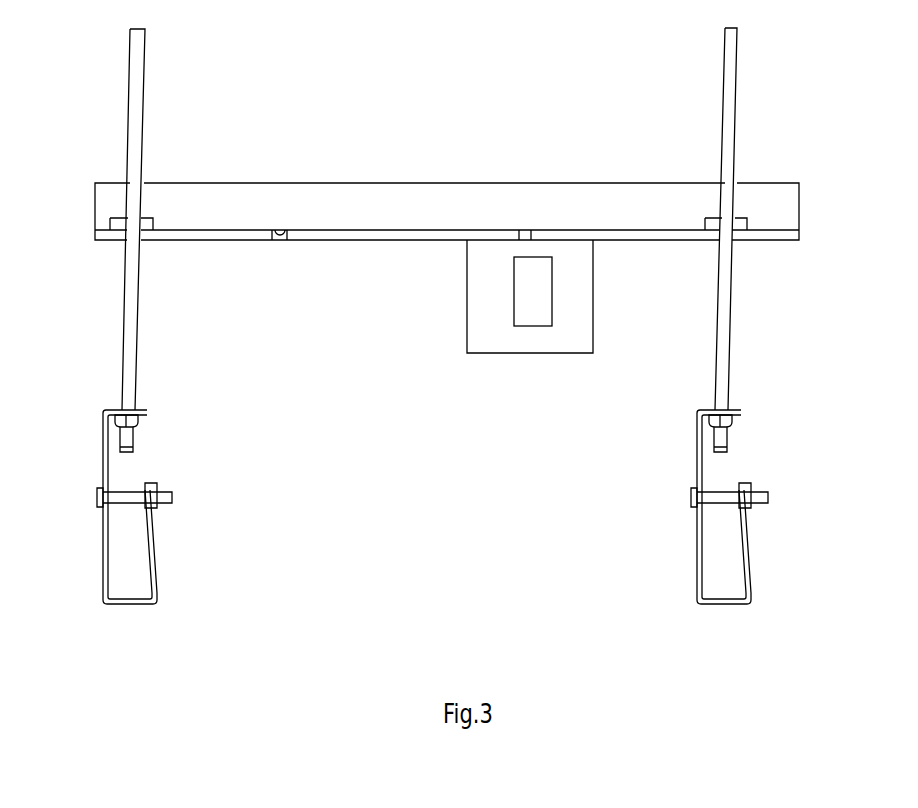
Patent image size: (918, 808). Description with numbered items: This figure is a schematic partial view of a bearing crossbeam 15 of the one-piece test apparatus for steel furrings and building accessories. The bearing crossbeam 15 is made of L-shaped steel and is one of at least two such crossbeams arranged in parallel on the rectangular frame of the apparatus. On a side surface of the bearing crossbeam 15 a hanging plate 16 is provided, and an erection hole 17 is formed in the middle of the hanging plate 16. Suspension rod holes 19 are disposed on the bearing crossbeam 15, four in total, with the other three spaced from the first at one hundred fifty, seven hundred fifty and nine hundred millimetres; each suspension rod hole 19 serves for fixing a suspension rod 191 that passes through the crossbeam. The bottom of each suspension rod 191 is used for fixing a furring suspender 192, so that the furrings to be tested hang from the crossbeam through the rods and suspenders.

The bearing crossbeam 15 is at (305, 195).
The hanging plate 16 is at (484, 342).
The erection hole 17 is at (534, 288).
The suspension rod hole 19 is at (280, 238).
The suspension rod 191 is at (138, 115).
The furring suspender 192 is at (155, 580).